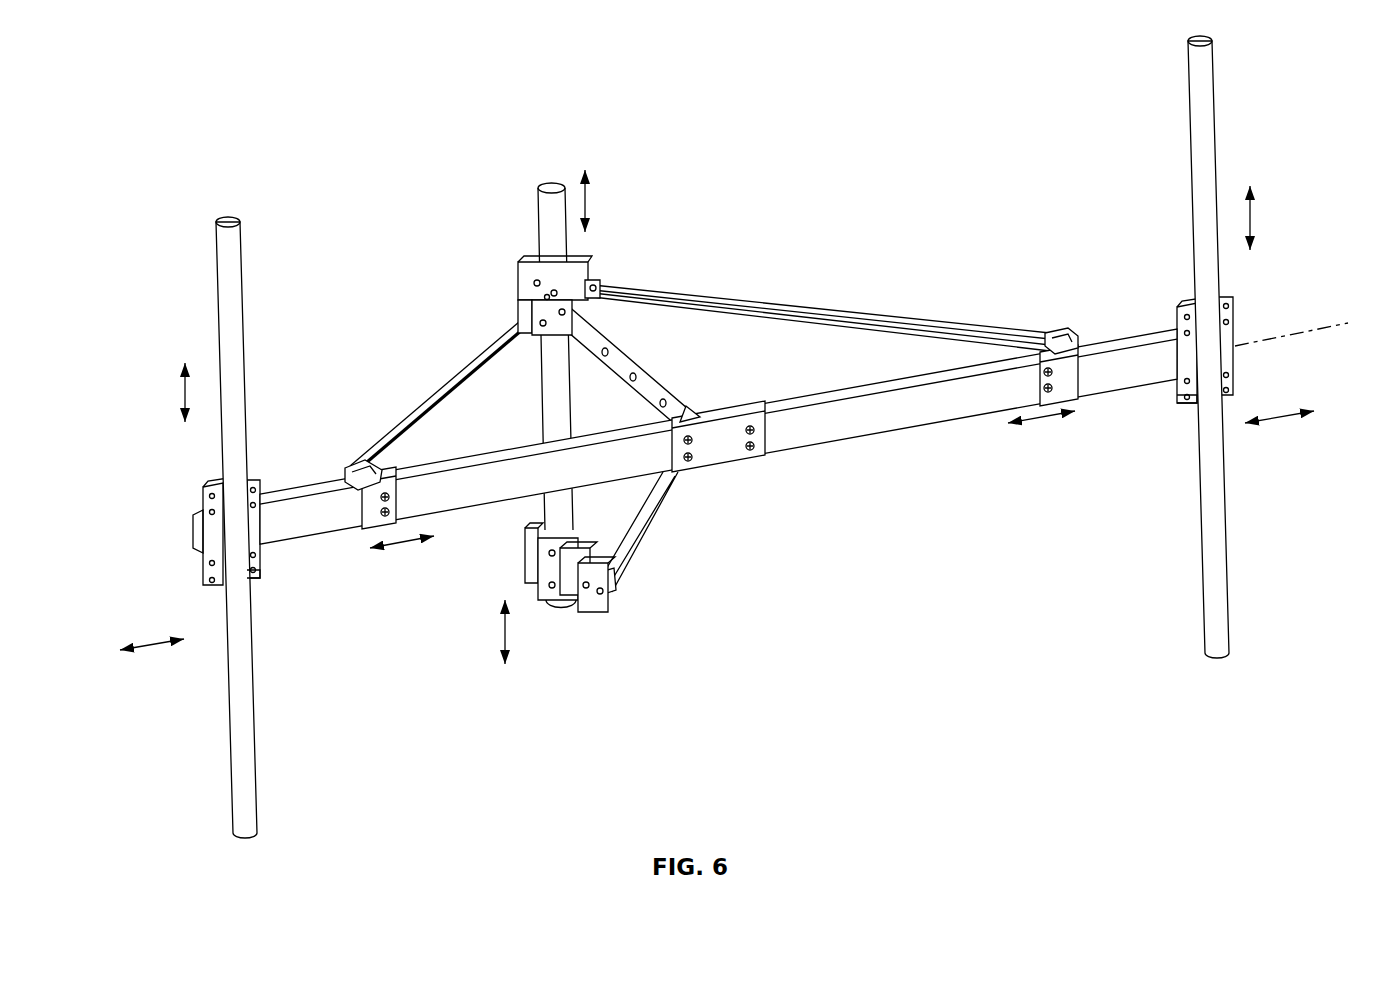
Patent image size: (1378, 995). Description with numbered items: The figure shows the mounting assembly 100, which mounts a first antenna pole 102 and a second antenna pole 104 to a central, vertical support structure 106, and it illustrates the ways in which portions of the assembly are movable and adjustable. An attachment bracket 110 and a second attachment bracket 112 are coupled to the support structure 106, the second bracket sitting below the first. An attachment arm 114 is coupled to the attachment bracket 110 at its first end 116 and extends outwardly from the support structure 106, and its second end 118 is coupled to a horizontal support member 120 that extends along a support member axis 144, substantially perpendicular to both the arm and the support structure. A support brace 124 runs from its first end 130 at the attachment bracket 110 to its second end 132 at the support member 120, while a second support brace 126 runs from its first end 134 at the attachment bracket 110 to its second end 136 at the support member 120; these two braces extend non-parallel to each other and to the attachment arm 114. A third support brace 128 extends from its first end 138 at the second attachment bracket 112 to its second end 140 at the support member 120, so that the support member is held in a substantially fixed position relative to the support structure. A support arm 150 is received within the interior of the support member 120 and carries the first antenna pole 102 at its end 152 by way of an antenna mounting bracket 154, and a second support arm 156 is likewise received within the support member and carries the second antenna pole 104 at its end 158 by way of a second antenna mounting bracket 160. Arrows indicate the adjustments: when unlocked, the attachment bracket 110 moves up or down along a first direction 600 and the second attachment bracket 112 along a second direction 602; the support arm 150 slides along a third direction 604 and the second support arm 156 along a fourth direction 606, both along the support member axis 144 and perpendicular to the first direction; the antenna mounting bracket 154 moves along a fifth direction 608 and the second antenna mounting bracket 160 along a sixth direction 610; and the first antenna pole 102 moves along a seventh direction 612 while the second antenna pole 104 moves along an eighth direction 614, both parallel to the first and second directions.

The mounting assembly 100 is at (203, 108).
The first antenna pole 102 is at (225, 252).
The second antenna pole 104 is at (1198, 58).
The support structure 106 is at (548, 220).
The attachment bracket 110 is at (525, 270).
The second attachment bracket 112 is at (533, 557).
The attachment arm 114 is at (621, 347).
The first end 116 is at (598, 291).
The second end 118 is at (700, 403).
The support member 120 is at (940, 400).
The support brace 124 is at (447, 380).
The second support brace 126 is at (920, 322).
The third support brace 128 is at (650, 510).
The first end 130 is at (525, 293).
The second end 132 is at (355, 468).
The first end 134 is at (595, 283).
The second end 136 is at (1055, 337).
The first end 138 is at (615, 562).
The second end 140 is at (694, 385).
The support member axis 144 is at (1300, 333).
The support arm 150 is at (313, 517).
The end 152 is at (198, 512).
The antenna mounting bracket 154 is at (250, 575).
The second support arm 156 is at (1118, 372).
The end 158 is at (1165, 332).
The second antenna mounting bracket 160 is at (1195, 403).
The first direction 600 is at (590, 196).
The second direction 602 is at (503, 635).
The third direction 604 is at (400, 548).
The fourth direction 606 is at (1043, 421).
The fifth direction 608 is at (150, 645).
The sixth direction 610 is at (1280, 419).
The seventh direction 612 is at (180, 396).
The eighth direction 614 is at (1253, 218).